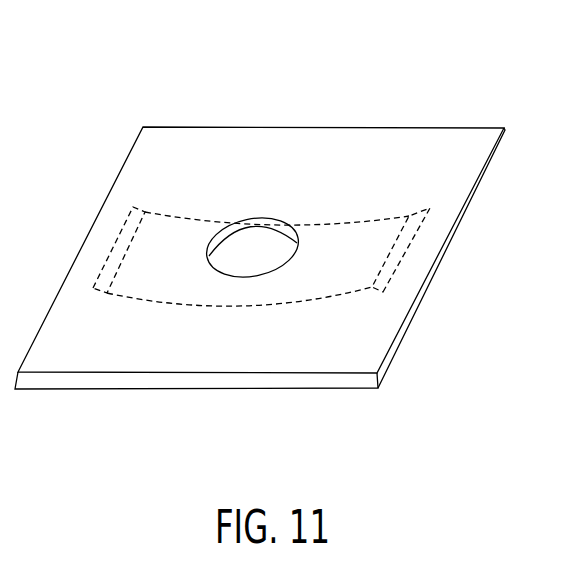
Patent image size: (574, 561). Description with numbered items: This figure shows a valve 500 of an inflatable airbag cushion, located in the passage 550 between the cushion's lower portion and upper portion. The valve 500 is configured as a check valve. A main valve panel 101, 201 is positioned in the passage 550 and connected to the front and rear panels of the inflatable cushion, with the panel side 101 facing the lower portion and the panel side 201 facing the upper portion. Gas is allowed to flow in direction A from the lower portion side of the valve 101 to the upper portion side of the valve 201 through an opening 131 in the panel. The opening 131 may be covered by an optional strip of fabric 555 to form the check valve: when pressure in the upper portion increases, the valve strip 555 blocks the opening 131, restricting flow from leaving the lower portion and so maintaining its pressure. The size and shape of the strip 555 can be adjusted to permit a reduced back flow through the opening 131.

The valve 500 is at (355, 90).
The main valve panel 101 is at (363, 371).
The main valve panel 201 is at (300, 390).
The strip of fabric 555 is at (140, 245).
The passage 550 is at (222, 261).
The direction A is at (255, 244).
The opening 131 is at (288, 262).